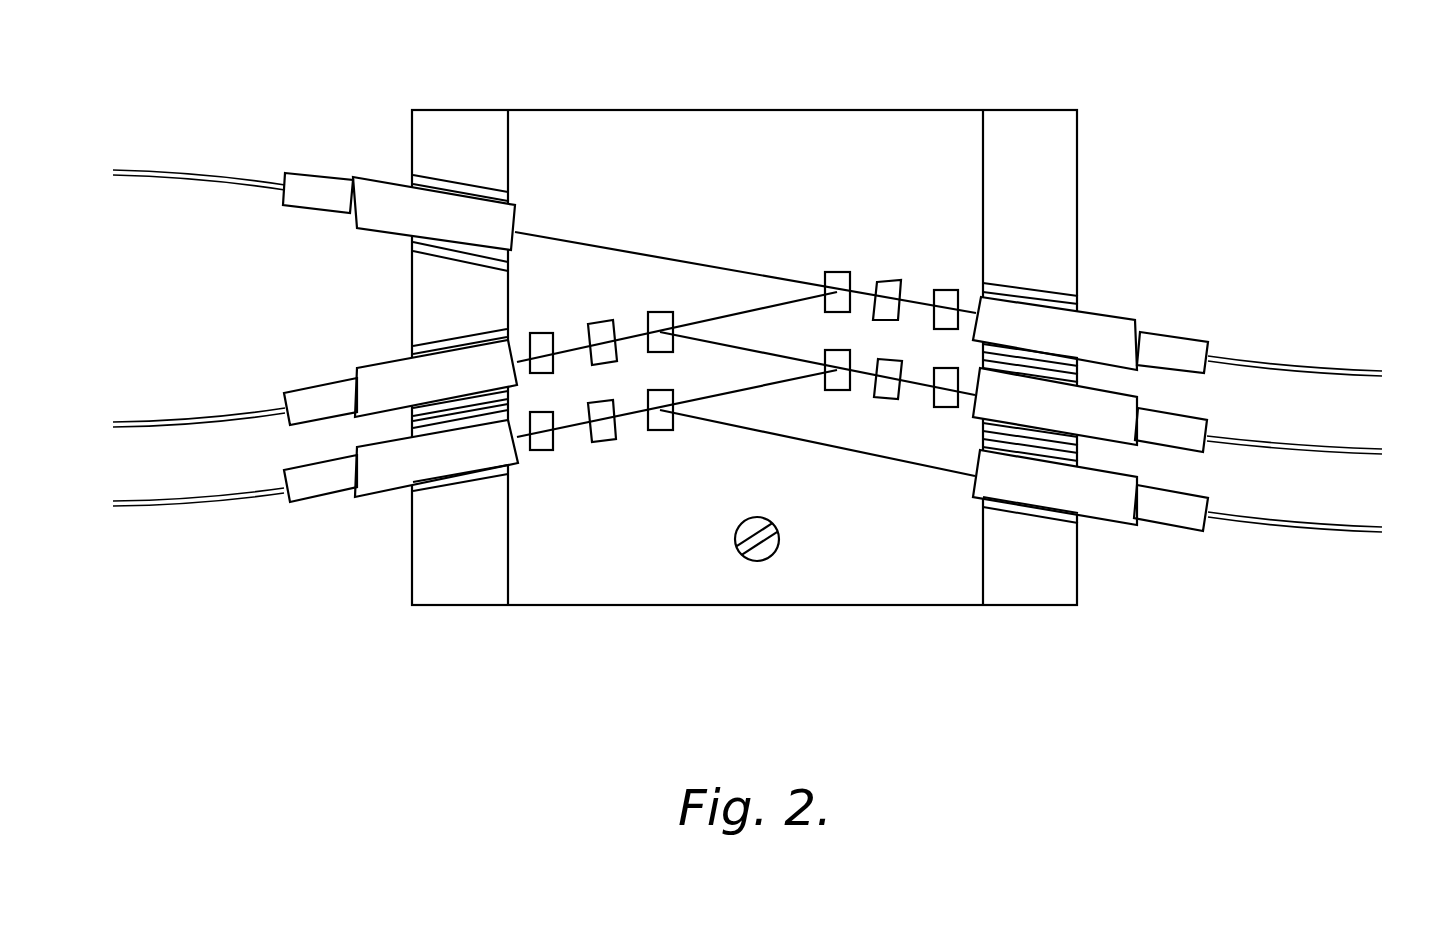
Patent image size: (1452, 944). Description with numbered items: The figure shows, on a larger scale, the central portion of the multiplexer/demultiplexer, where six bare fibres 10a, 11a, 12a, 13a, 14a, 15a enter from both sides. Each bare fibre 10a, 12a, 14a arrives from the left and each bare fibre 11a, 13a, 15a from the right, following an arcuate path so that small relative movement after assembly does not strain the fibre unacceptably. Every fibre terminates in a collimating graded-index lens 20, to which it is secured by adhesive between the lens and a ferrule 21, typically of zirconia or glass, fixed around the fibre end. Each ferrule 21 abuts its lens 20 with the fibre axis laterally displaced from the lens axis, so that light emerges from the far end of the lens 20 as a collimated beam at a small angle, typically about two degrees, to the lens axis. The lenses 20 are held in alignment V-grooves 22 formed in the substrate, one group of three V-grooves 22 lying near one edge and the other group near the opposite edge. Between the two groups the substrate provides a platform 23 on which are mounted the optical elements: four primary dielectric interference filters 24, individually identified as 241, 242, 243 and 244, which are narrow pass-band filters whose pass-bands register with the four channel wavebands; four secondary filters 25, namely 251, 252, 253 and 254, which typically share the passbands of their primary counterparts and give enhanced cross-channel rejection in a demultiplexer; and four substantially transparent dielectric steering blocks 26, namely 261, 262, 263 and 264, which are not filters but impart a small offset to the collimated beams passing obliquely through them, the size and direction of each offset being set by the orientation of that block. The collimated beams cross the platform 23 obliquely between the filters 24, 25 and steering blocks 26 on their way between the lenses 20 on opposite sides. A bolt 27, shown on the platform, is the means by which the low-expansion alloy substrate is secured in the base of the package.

The bare fibre 10a is at (200, 177).
The bare fibre 11a is at (1273, 367).
The bare fibre 12a is at (233, 415).
The bare fibre 13a is at (1278, 443).
The bare fibre 14a is at (190, 498).
The bare fibre 15a is at (1307, 527).
The collimating graded-index lens 20 is at (393, 460).
The ferrule 21 is at (320, 192).
The alignment V-groove 22 is at (472, 248).
The platform 23 is at (732, 587).
The primary dielectric interference filter 24 is at (746, 359).
The primary dielectric interference filter 241 is at (838, 280).
The primary dielectric interference filter 242 is at (660, 317).
The primary dielectric interference filter 243 is at (841, 385).
The primary dielectric interference filter 244 is at (663, 420).
The secondary dielectric interference filter 25 is at (733, 365).
The secondary dielectric interference filter 251 is at (890, 288).
The secondary dielectric interference filter 252 is at (600, 330).
The secondary dielectric interference filter 253 is at (888, 398).
The secondary dielectric interference filter 254 is at (602, 437).
The dielectric steering block 26 is at (725, 359).
The dielectric steering block 261 is at (948, 297).
The dielectric steering block 262 is at (545, 330).
The dielectric steering block 263 is at (945, 400).
The dielectric steering block 264 is at (542, 445).
The bolt 27 is at (766, 552).